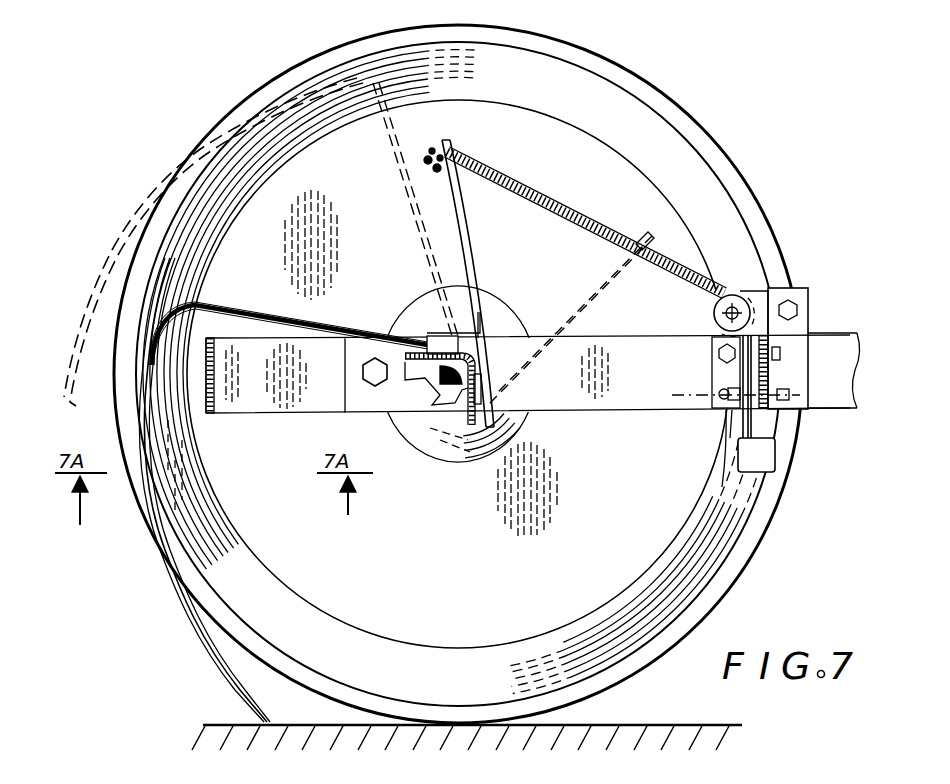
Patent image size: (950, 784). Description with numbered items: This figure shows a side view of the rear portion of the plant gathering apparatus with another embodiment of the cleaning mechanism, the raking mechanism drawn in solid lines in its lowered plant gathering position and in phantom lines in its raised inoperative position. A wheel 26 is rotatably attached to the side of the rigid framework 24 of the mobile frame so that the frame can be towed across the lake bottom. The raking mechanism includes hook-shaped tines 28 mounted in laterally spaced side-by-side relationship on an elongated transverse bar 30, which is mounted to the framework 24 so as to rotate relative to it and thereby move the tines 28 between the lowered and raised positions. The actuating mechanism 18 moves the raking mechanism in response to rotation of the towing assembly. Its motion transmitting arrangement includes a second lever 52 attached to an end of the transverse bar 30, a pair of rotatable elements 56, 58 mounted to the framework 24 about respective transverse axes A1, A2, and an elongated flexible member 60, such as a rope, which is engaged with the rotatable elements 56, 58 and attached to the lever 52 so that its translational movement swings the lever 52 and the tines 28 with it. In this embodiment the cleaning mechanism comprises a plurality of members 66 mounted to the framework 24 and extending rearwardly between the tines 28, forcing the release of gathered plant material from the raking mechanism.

The actuating mechanism 18 is at (640, 387).
The rigid framework 24 is at (831, 326).
The wheel 26 is at (459, 597).
The tine 28 is at (400, 152).
The transverse bar 30 is at (412, 427).
The second lever 52 is at (598, 295).
The rotatable element 56 is at (753, 492).
The rotatable element 58 is at (714, 326).
The elongated flexible member 60 is at (560, 205).
The cleaning member 66 is at (212, 372).
The axis A1 is at (698, 409).
The axis A2 is at (714, 306).